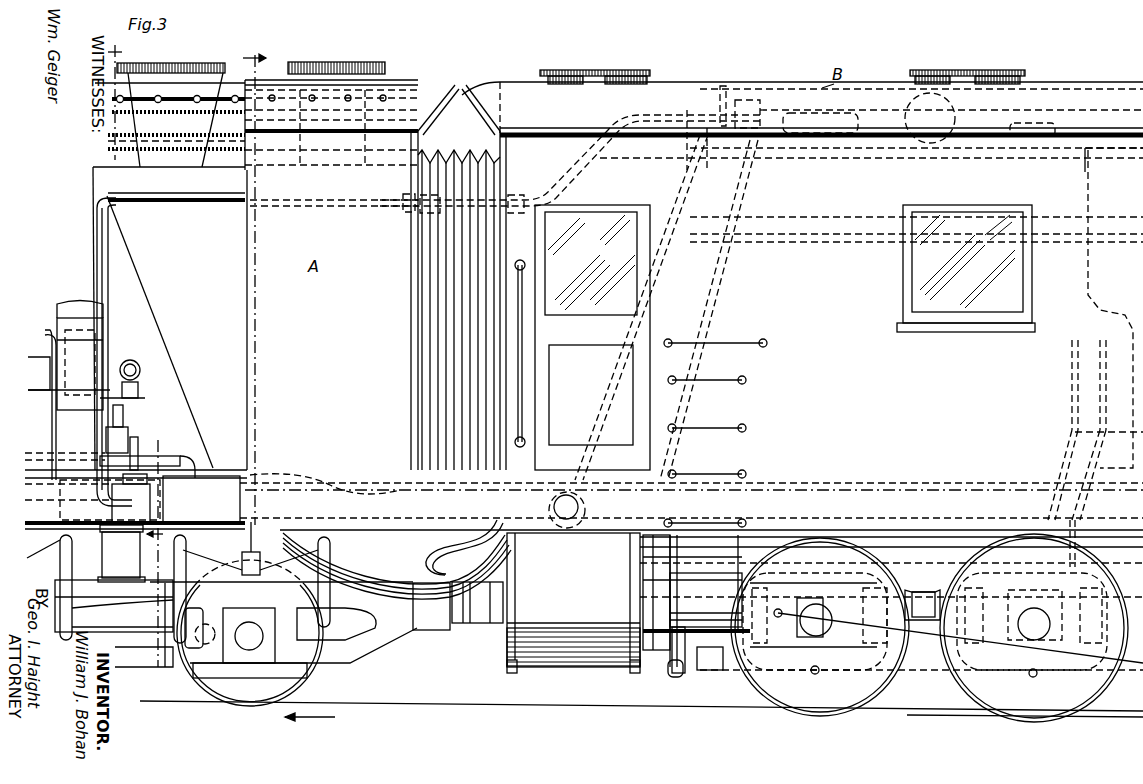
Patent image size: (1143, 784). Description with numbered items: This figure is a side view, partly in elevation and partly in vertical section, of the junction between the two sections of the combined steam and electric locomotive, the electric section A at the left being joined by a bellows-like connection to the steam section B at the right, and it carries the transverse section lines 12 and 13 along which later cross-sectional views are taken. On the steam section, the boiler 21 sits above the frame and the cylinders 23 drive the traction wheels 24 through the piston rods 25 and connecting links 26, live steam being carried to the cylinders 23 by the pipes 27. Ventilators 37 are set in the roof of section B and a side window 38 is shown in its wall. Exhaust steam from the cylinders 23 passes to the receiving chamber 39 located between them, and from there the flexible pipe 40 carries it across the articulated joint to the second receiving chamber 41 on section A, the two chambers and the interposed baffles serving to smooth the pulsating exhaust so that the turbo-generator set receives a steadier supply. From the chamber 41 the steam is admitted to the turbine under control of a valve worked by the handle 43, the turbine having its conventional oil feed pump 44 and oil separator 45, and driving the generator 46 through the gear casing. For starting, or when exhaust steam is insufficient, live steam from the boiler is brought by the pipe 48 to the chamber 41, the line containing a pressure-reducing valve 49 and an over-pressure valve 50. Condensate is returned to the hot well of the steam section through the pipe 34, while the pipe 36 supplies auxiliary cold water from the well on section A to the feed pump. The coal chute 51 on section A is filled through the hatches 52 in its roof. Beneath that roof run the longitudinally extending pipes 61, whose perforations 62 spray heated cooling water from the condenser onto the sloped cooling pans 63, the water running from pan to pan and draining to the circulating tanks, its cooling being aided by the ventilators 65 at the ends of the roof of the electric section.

The section line 12 is at (136, 349).
The section line 13 is at (255, 281).
The boiler 21 is at (1082, 152).
The cylinders 23 is at (628, 603).
The traction wheels 24 is at (956, 684).
The piston rods 25 is at (688, 618).
The connecting links 26 is at (940, 650).
The pipes 27 is at (816, 233).
The pipe 34 is at (1096, 95).
The pipe 36 is at (438, 588).
The ventilators 37 is at (648, 79).
The side windows 38 is at (966, 268).
The receiving chamber 39 is at (530, 484).
The flexible pipe 40 is at (370, 562).
The second receiving chamber 41 is at (150, 499).
The handle 43 is at (142, 398).
The oil feed pump 44 is at (80, 346).
The oil separator 45 is at (48, 332).
The generator 46 is at (570, 176).
The pipe 48 is at (110, 210).
The pressure-reducing valve 49 is at (140, 448).
The over-pressure valve 50 is at (152, 474).
The coal chute 51 is at (148, 320).
The hatches 52 is at (160, 68).
The longitudinally extending pipes 61 is at (212, 95).
The perforations 62 is at (160, 110).
The cooling pans 63 is at (157, 150).
The ventilators 65 is at (420, 112).